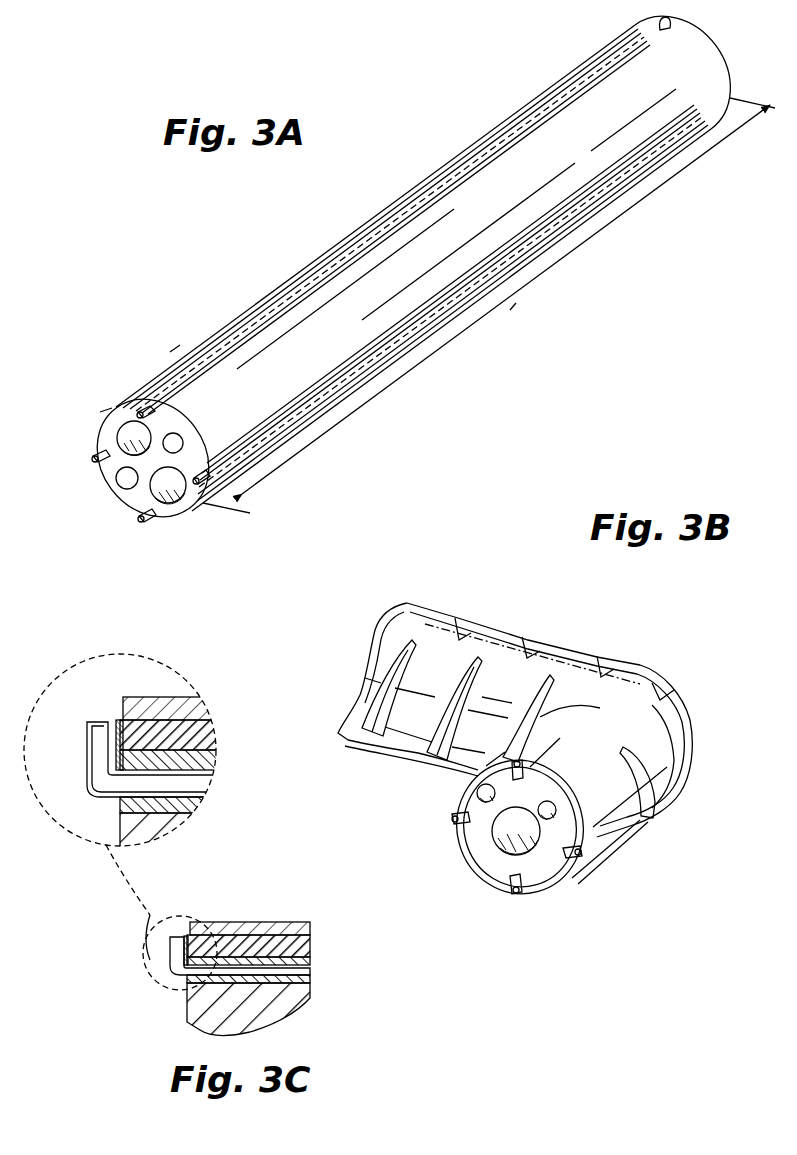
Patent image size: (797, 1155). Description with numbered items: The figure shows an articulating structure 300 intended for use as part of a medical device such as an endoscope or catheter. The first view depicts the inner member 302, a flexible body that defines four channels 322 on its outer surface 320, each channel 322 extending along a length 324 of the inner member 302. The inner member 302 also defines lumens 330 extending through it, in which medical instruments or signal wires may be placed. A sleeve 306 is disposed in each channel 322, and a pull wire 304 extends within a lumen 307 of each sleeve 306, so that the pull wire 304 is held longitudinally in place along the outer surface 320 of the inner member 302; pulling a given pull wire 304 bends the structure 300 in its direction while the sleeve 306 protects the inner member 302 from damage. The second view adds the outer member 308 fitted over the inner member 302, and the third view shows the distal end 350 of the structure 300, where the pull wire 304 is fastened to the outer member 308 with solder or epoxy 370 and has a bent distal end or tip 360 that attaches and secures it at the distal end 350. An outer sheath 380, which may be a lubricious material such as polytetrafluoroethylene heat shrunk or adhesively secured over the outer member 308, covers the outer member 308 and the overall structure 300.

In FIG. 3B, the articulating structure 300 is at (546, 607).
In FIG. 3A, the inner member 302 is at (258, 291).
In FIG. 3C, the inner member 302 is at (290, 998).
In FIG. 3A, the pull wire 304 is at (100, 462).
In FIG. 3C, the pull wire 304 is at (305, 975).
In FIG. 3A, the sleeve 306 is at (666, 36).
In FIG. 3C, the sleeve 306 is at (266, 957).
In FIG. 3A, the lumen 307 is at (672, 24).
In FIG. 3B, the outer member 308 is at (650, 666).
In FIG. 3C, the outer member 308 is at (233, 934).
In FIG. 3A, the outer surface 320 is at (108, 410).
In FIG. 3A, the channel 322 is at (178, 350).
In FIG. 3A, the length 324 is at (524, 302).
In FIG. 3A, the lumen 330 is at (170, 496).
In FIG. 3B, the distal end 350 is at (476, 845).
In FIG. 3C, the distal end 350 is at (134, 976).
In FIG. 3C, the bent distal end or tip 360 is at (97, 756).
In FIG. 3C, the solder or epoxy 370 is at (119, 722).
In FIG. 3C, the outer sheath 380 is at (178, 702).